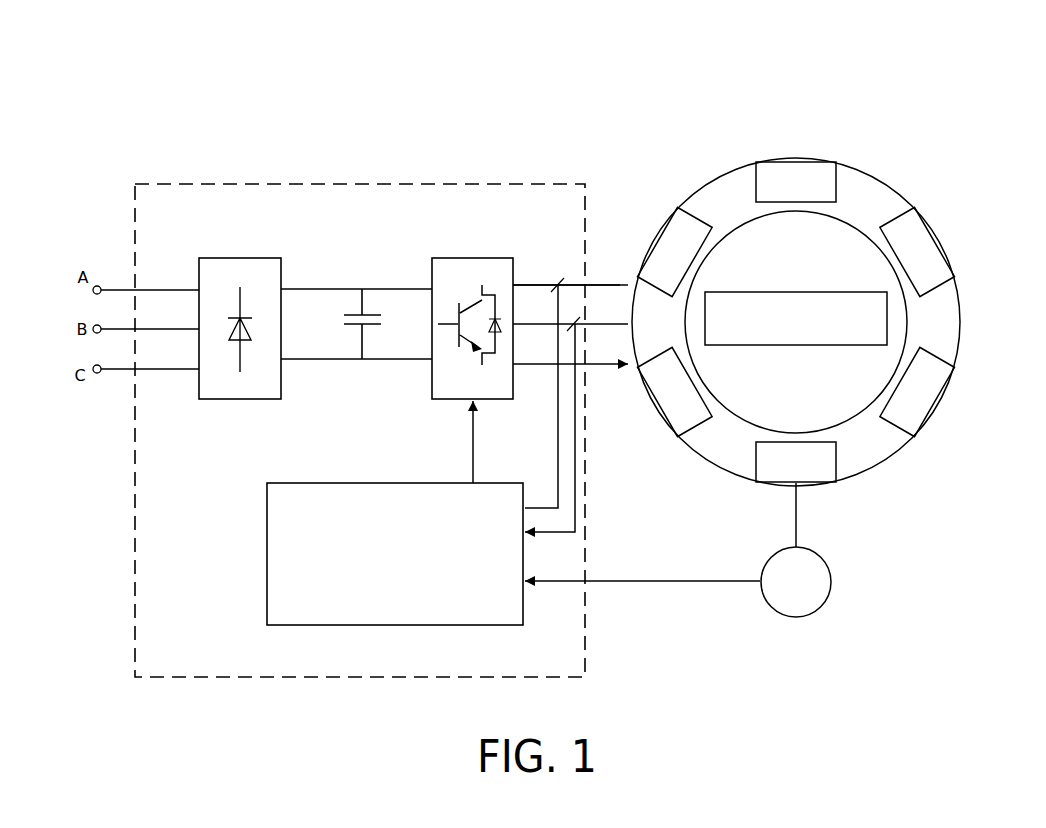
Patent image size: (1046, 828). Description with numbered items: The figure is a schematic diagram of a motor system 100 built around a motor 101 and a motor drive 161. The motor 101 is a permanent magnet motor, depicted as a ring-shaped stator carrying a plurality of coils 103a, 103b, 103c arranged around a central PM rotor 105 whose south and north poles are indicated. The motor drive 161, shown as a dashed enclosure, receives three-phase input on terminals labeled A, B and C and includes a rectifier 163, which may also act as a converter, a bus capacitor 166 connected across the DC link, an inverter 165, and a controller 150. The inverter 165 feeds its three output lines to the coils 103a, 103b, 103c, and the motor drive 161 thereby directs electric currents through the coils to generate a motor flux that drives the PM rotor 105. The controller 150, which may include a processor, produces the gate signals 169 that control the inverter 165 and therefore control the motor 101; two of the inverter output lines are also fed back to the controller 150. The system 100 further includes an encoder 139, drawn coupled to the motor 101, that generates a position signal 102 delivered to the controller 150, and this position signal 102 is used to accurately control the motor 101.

The motor system 100 is at (100, 60).
The motor 101 is at (749, 163).
The position signal 102 is at (668, 579).
The coil 103a is at (796, 322).
The coil 103b is at (795, 321).
The coil 103c is at (795, 321).
The PM rotor 105 is at (796, 318).
The encoder 139 is at (796, 550).
The controller 150 is at (395, 554).
The motor drive 161 is at (298, 184).
The rectifier 163 is at (225, 258).
The inverter 165 is at (473, 258).
The bus capacitor 166 is at (355, 335).
The gate signals 169 is at (471, 450).